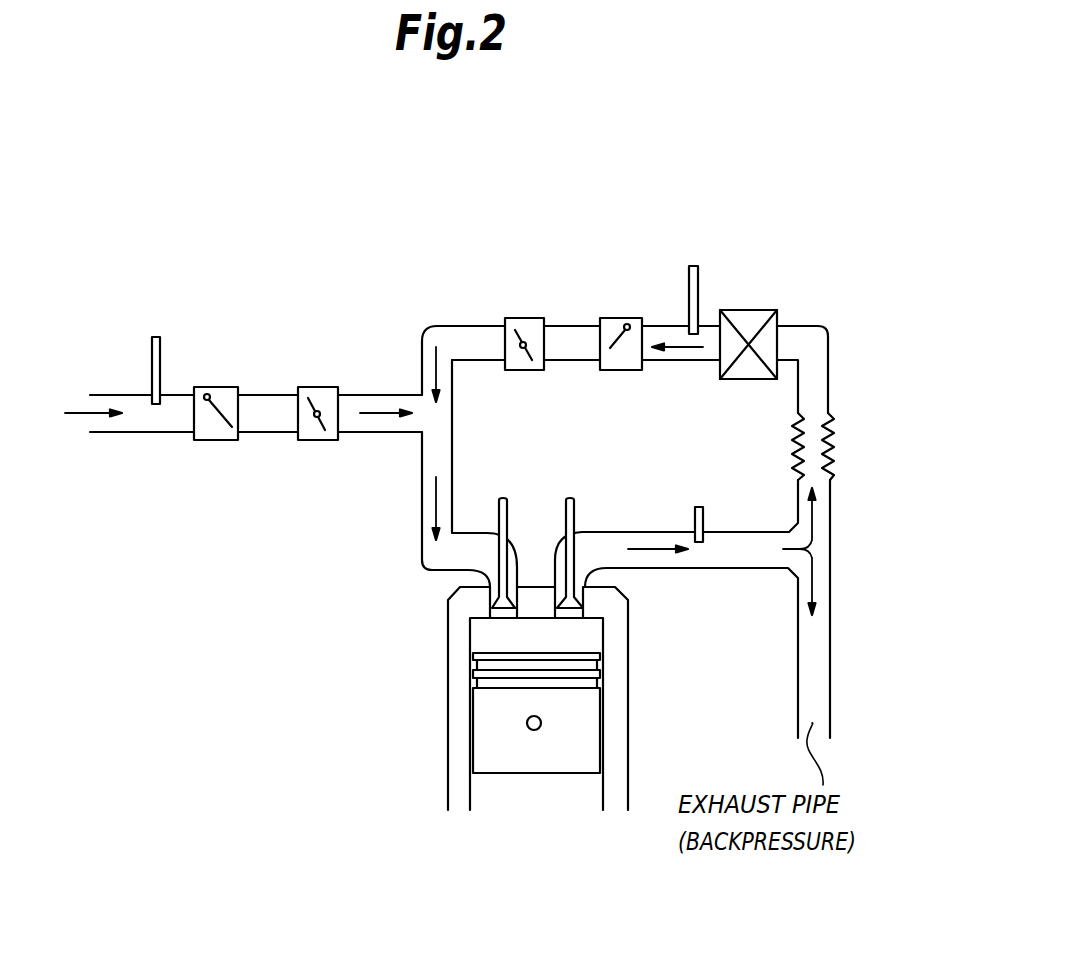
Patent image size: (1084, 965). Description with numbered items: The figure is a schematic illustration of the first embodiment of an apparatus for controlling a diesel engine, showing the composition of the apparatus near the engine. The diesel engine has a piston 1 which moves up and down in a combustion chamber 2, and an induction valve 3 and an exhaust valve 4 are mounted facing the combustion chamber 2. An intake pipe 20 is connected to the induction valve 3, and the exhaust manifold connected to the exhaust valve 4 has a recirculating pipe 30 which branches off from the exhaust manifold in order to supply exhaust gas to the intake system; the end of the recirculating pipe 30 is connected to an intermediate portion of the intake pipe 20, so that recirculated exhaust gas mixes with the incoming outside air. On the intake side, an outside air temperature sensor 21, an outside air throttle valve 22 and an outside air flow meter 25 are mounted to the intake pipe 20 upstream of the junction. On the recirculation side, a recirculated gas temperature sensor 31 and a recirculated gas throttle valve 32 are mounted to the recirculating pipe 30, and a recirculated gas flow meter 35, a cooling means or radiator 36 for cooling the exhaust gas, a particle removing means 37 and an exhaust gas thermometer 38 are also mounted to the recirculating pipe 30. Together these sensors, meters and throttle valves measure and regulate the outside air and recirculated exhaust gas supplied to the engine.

The piston 1 is at (485, 755).
The combustion chamber 2 is at (509, 645).
The induction valve 3 is at (490, 608).
The exhaust valve 4 is at (587, 597).
The intake pipe 20 is at (148, 423).
The outside air temperature sensor 21 is at (157, 337).
The outside air throttle valve 22 is at (318, 388).
The outside air flow meter 25 is at (213, 387).
The recirculating pipe 30 is at (478, 333).
The recirculated gas temperature sensor 31 is at (695, 266).
The recirculated gas throttle valve 32 is at (528, 318).
The recirculated gas flow meter 35 is at (620, 318).
The radiator 36 is at (833, 458).
The particle removing means 37 is at (765, 310).
The exhaust gas thermometer 38 is at (693, 517).